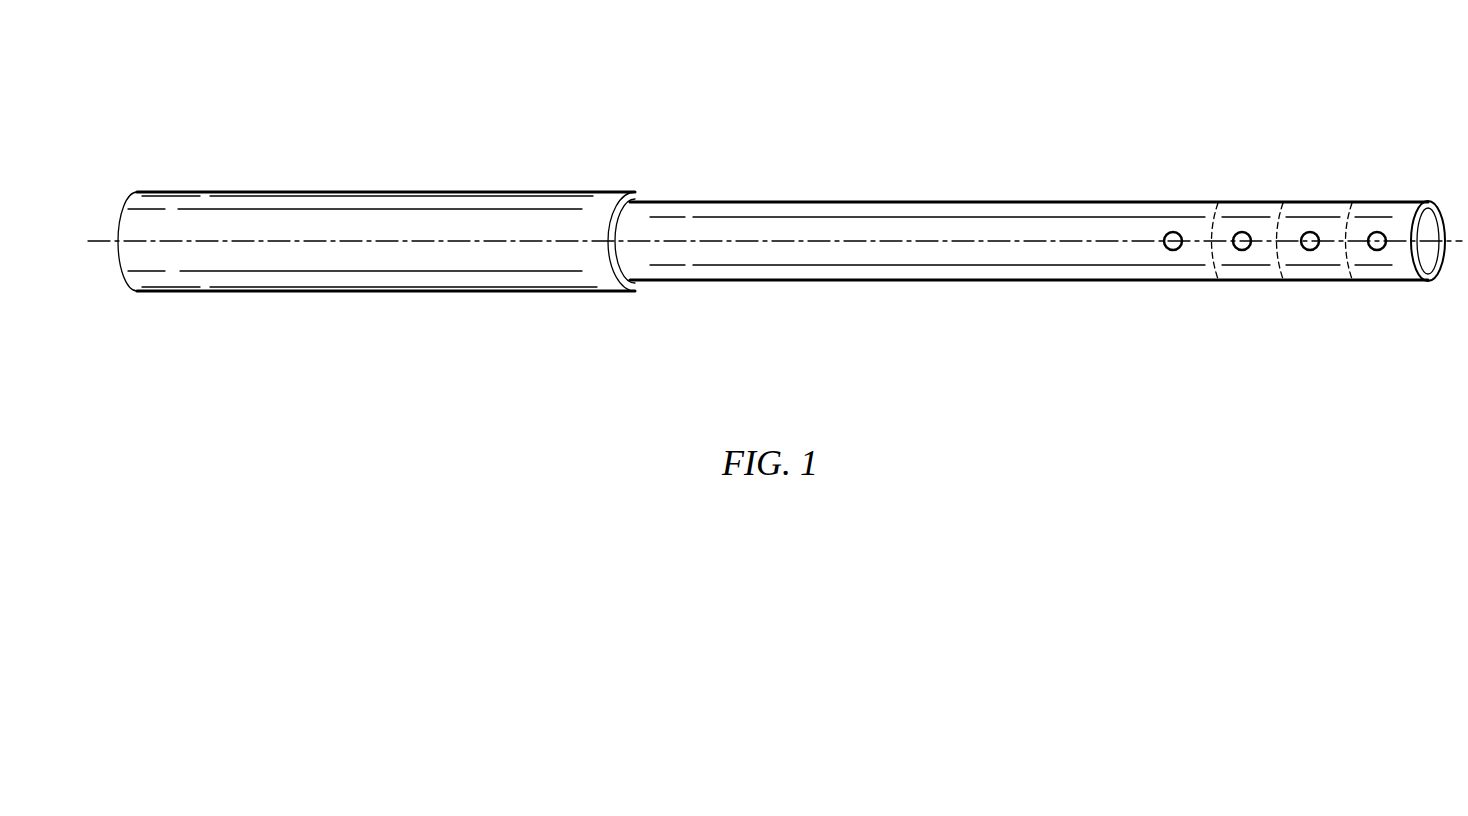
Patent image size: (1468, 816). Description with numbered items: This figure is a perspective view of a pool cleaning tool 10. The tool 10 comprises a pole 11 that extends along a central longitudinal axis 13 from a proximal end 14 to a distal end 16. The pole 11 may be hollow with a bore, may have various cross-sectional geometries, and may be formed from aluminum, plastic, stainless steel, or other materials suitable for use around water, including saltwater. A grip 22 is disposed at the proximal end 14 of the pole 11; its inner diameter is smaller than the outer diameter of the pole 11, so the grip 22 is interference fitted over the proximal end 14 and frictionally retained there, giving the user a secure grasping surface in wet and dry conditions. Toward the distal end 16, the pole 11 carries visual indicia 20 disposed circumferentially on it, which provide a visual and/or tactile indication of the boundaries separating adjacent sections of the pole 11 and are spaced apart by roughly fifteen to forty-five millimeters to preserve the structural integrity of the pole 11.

The pool cleaning tool 10 is at (932, 72).
The pole 11 is at (1425, 297).
The central longitudinal axis 13 is at (570, 240).
The proximal end 14 is at (291, 124).
The distal end 16 is at (1312, 146).
The visual indicia 20 is at (1213, 272).
The grip 22 is at (455, 293).